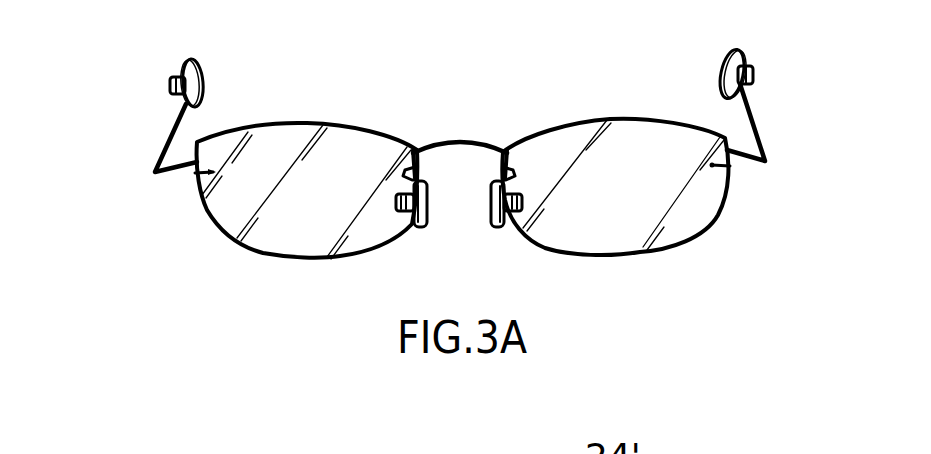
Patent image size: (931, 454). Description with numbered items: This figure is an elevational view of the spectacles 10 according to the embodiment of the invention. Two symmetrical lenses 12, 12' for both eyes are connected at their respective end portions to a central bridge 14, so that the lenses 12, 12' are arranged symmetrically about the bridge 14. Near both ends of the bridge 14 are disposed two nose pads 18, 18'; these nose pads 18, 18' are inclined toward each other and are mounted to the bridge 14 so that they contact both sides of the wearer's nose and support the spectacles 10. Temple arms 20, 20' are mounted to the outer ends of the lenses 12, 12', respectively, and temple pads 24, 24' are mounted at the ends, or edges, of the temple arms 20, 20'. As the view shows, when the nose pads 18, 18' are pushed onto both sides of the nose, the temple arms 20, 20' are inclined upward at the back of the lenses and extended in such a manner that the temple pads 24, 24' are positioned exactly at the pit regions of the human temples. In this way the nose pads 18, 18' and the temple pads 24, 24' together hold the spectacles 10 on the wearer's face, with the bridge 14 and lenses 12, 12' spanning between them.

The spectacles 10 is at (419, 96).
The lens 12 is at (306, 163).
The lens 12' is at (616, 164).
The bridge 14 is at (440, 143).
The nose pad 18 is at (416, 238).
The nose pad 18' is at (508, 238).
The temple arm 20 is at (177, 120).
The temple arm 20' is at (772, 84).
The temple pad 24 is at (205, 57).
The temple pad 24' is at (763, 54).